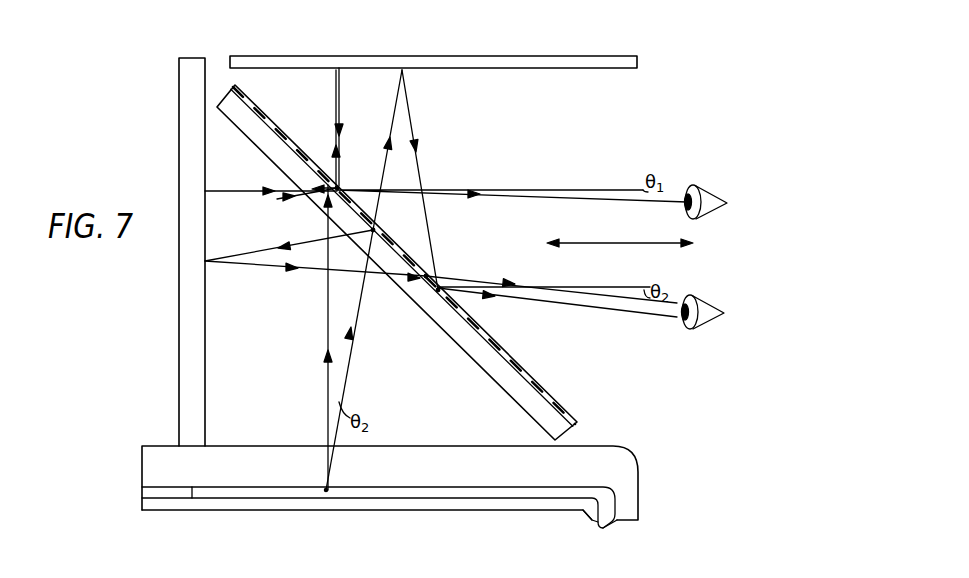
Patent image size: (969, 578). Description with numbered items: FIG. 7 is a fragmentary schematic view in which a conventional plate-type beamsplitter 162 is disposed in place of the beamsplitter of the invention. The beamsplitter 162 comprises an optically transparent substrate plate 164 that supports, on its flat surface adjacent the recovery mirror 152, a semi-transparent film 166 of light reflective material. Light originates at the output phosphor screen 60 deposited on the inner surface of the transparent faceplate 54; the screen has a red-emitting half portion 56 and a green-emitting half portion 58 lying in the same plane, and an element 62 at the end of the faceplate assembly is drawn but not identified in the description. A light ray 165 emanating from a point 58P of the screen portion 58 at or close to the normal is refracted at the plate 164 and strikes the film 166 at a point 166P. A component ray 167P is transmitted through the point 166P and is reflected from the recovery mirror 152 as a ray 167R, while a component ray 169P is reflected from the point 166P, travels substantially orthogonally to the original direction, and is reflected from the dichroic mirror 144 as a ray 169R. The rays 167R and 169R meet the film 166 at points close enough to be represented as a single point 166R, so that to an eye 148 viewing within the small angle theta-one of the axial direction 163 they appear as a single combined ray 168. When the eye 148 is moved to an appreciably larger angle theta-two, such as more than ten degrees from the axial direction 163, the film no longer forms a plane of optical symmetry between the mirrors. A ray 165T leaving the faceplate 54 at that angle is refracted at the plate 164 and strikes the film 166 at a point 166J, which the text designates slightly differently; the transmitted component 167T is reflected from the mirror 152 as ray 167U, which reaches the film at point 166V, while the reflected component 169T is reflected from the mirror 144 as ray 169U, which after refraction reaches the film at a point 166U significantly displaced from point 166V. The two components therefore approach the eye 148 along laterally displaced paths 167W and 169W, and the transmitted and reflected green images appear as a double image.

The faceplate 54 is at (230, 458).
The half portion 56 is at (175, 498).
The half portion 58 is at (285, 499).
The point 58P is at (324, 488).
The output phosphor screen 60 is at (228, 516).
The end foot of light guide 62 is at (563, 506).
The dichroic mirror 144 is at (179, 79).
The eye 148 is at (700, 192).
The recovery mirror 152 is at (587, 56).
The conventional plate-type beamsplitter 162 is at (413, 262).
The axial direction 163 is at (655, 243).
The optical transparent plate 164 is at (530, 405).
The light ray 165 is at (327, 388).
The light ray 165T is at (346, 378).
The semi-transparent film 166 is at (565, 408).
The point on coating 166J is at (375, 231).
The point 166P is at (333, 160).
The point 166R is at (340, 184).
The point 166U is at (424, 279).
The point 166V is at (437, 294).
The component light ray 167P is at (337, 102).
The light ray 167R is at (341, 106).
The component light ray 167T is at (395, 108).
The light ray 167U is at (411, 130).
The path 167W is at (481, 296).
The single combined ray 168 is at (448, 192).
The component light ray 169P is at (281, 189).
The light ray 169R is at (250, 198).
The component light ray 169T is at (262, 251).
The light ray 169U is at (264, 275).
The path 169W is at (460, 279).